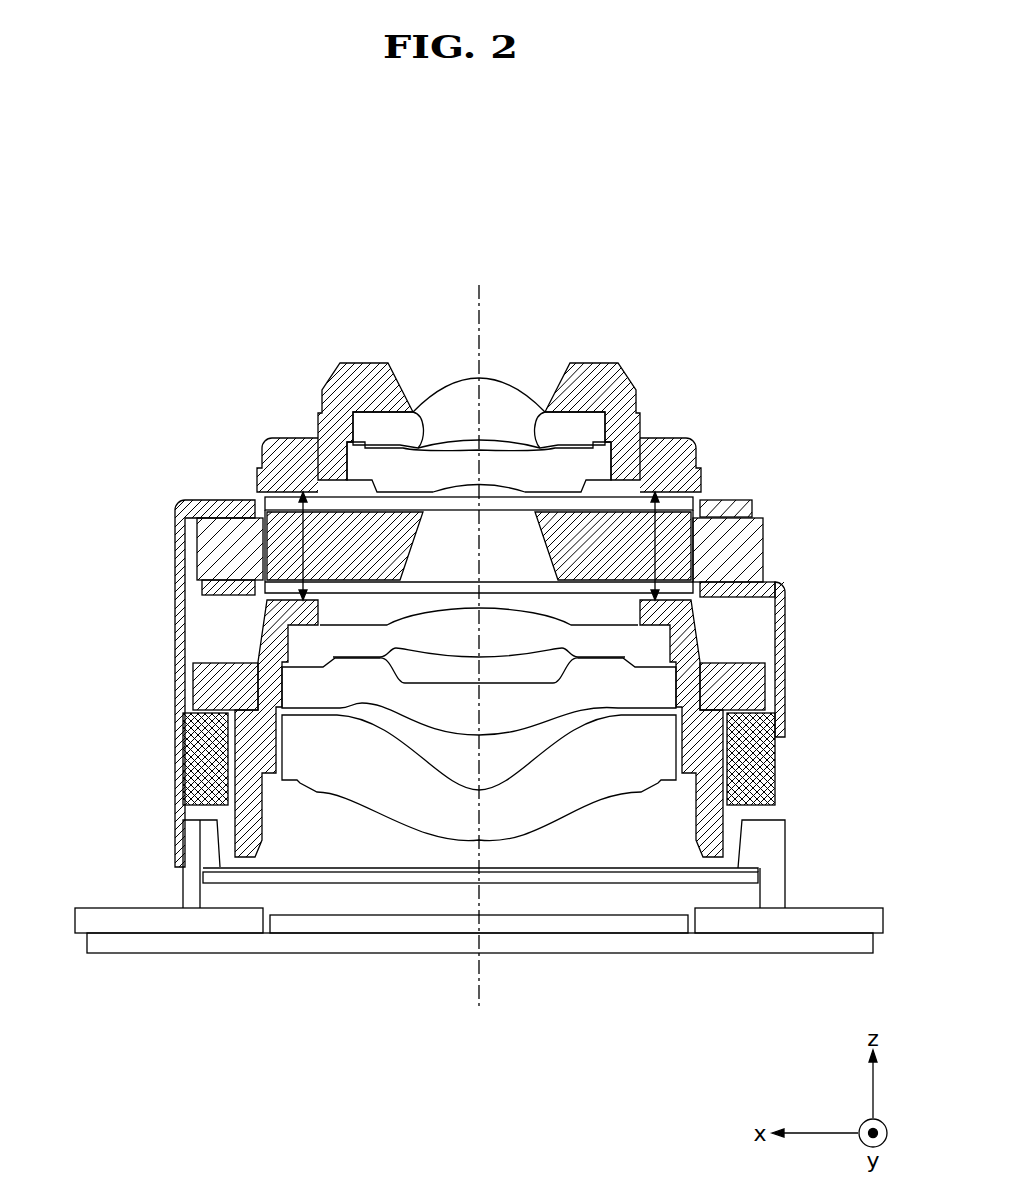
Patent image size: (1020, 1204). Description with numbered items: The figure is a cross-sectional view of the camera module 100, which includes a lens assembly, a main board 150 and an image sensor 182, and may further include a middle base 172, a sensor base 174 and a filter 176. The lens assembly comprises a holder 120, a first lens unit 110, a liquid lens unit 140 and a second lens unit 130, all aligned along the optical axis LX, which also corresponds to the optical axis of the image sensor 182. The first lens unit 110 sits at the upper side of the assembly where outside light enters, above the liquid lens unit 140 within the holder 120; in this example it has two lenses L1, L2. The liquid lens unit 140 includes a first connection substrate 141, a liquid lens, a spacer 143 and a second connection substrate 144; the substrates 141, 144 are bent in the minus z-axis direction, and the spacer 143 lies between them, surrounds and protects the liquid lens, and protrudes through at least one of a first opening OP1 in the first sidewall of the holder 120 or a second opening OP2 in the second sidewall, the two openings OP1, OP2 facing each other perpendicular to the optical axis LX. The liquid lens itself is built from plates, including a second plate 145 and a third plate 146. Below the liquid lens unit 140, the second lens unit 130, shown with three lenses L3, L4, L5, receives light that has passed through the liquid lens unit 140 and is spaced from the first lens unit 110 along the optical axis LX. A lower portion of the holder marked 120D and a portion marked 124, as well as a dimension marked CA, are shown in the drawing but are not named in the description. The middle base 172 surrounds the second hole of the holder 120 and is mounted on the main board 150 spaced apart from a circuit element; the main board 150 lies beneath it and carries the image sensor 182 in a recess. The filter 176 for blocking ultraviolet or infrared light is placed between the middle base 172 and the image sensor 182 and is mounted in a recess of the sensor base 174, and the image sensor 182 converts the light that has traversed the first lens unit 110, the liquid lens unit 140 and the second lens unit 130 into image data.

The camera module 100 is at (714, 143).
The first lens unit 110 is at (479, 386).
The holder 120 is at (363, 363).
The lower lens barrel portion 120D is at (700, 652).
The barrel flange 124 is at (752, 688).
The second lens unit 130 is at (352, 724).
The liquid lens unit 140 is at (285, 492).
The first connection substrate 141 is at (178, 532).
The spacer 143 is at (207, 557).
The second connection substrate 144 is at (205, 590).
The second plate 145 is at (663, 508).
The third plate 146 is at (670, 588).
The main board 150 is at (204, 920).
The middle base 172 is at (183, 783).
The sensor base 174 is at (775, 847).
The filter 176 is at (748, 878).
The image sensor 182 is at (615, 918).
The lens L1 is at (452, 397).
The lens L2 is at (410, 473).
The lens L3 is at (318, 647).
The lens L4 is at (327, 692).
The lens L5 is at (317, 738).
The clear aperture CA is at (503, 533).
The first opening OP1 is at (292, 535).
The second opening OP2 is at (674, 508).
The optical axis LX is at (480, 671).